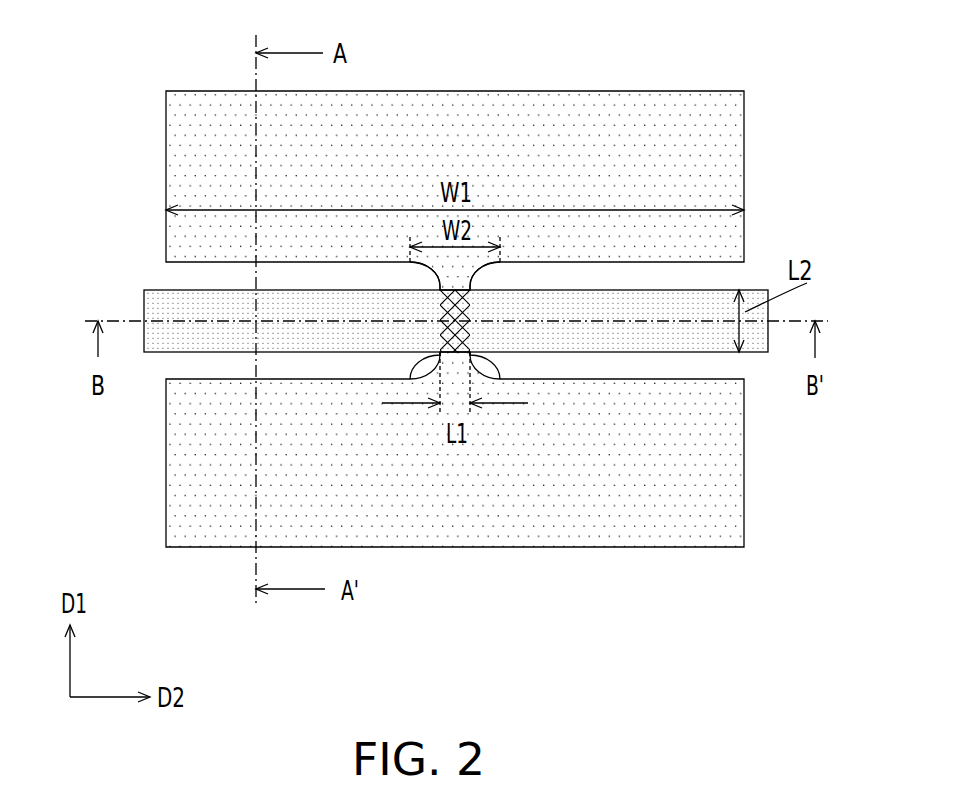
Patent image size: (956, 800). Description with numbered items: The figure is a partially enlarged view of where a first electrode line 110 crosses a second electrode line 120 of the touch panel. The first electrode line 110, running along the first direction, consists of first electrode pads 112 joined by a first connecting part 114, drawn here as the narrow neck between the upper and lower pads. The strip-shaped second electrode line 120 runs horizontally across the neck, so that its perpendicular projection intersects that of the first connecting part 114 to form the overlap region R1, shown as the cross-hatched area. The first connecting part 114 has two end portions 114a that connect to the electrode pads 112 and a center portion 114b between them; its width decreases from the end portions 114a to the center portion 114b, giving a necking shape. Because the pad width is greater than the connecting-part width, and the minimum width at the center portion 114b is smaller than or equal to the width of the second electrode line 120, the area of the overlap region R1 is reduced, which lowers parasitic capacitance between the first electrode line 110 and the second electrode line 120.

The first electrode line 110 is at (589, 78).
The first electrode pad 112 is at (724, 133).
The first connecting part 114 is at (63, 205).
The end portion 114a is at (455, 273).
The center portion 114b is at (448, 302).
The second electrode line 120 is at (770, 340).
The overlap region R1 is at (462, 337).